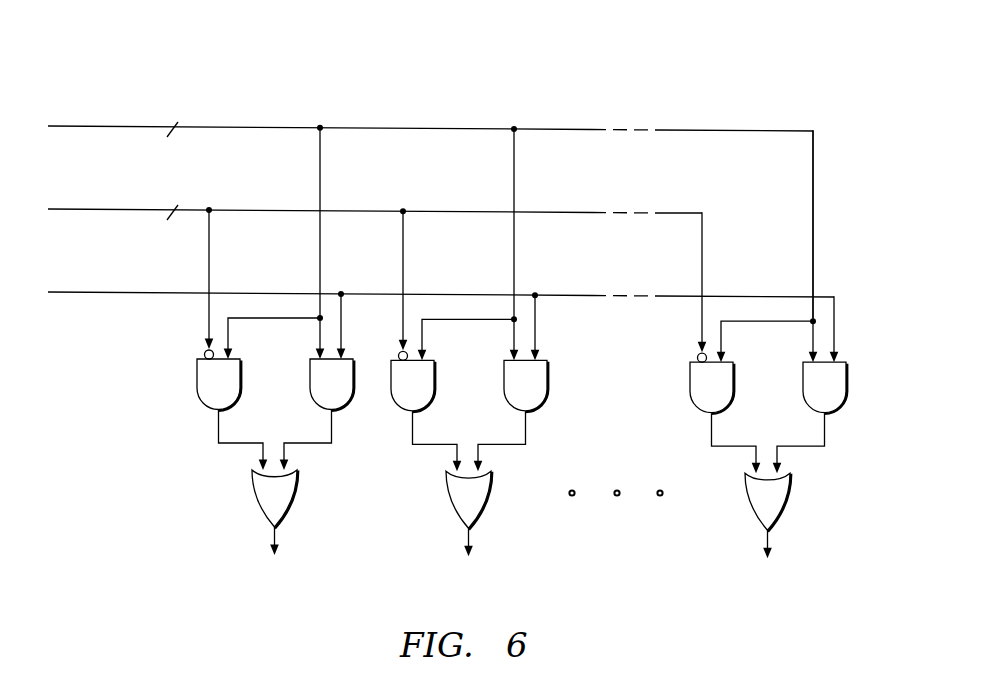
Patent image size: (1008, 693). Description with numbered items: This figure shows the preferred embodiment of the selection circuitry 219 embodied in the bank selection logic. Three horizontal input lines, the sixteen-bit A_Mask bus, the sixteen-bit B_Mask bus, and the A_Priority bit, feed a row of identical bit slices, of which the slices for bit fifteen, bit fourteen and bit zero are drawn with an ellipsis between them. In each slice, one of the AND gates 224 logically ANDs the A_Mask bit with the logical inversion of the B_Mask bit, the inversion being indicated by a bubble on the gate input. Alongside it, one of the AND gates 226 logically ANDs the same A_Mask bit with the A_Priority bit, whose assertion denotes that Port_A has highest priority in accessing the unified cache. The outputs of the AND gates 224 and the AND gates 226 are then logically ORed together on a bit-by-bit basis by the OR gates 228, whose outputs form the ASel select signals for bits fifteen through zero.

The selection circuitry 219 is at (781, 73).
The AND gates 224 is at (212, 412).
The AND gates 226 is at (310, 377).
The OR gates 228 is at (258, 516).